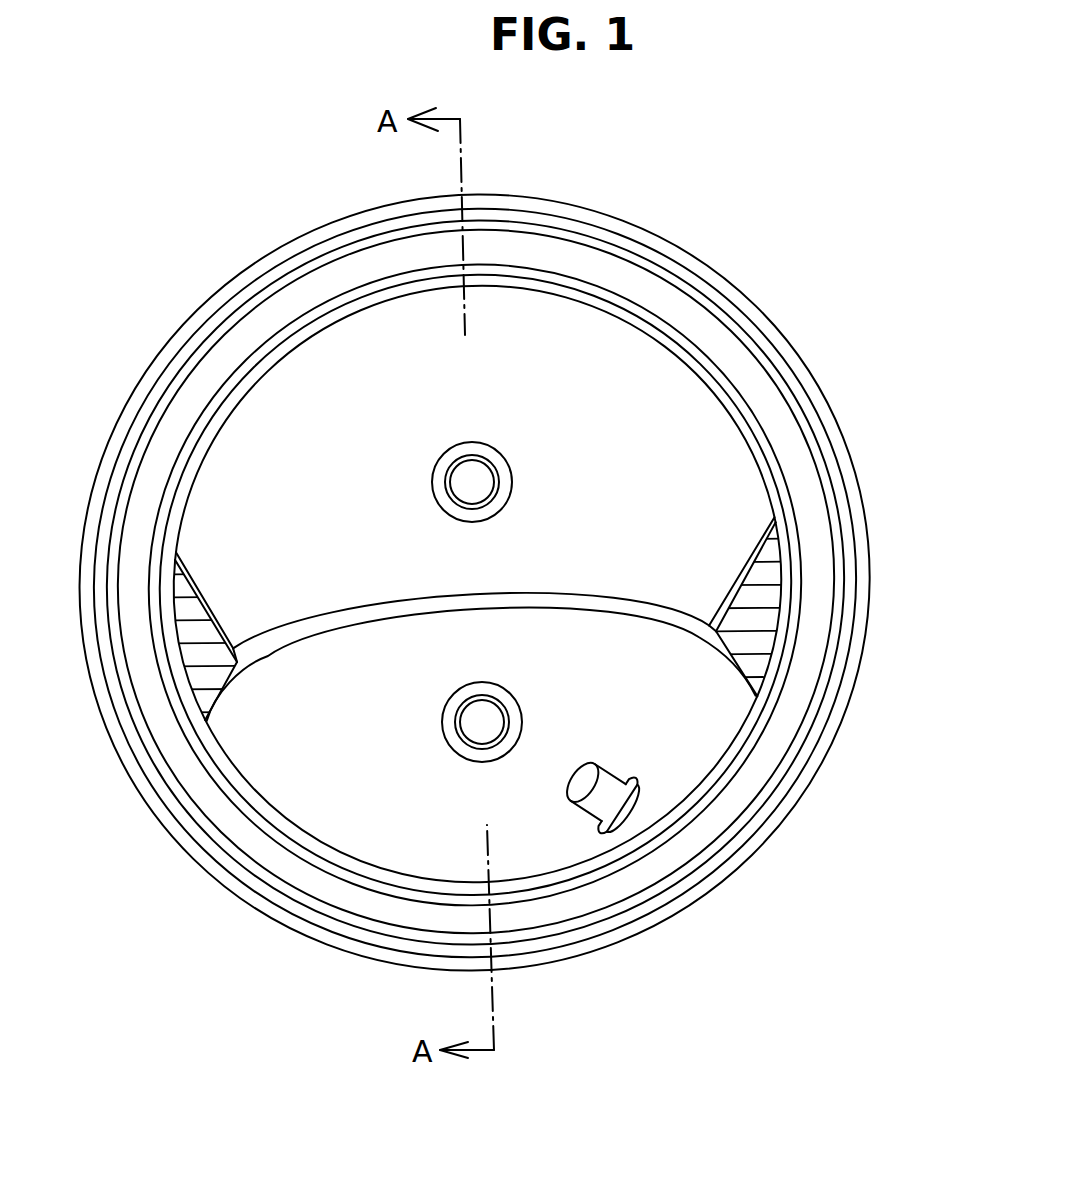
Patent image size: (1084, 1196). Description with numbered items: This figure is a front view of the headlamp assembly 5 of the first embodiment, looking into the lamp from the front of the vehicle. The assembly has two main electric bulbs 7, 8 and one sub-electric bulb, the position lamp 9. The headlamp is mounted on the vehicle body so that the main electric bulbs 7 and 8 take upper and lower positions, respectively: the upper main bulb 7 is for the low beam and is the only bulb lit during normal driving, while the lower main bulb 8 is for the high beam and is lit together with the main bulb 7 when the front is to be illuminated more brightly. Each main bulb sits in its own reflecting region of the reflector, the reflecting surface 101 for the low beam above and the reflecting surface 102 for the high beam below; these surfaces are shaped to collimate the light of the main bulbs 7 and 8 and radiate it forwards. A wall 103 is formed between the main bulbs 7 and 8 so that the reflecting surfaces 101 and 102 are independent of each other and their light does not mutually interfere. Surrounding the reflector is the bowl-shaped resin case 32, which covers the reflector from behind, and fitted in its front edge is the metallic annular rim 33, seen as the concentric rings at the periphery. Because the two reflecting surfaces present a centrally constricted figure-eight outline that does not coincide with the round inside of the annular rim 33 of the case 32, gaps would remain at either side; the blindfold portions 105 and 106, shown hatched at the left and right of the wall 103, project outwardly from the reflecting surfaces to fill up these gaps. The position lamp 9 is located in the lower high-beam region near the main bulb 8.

The headlamp assembly 5 is at (252, 933).
The main electric bulb 7 is at (480, 480).
The main electric bulb 8 is at (488, 720).
The position lamp 9 is at (604, 783).
The case 32 is at (848, 707).
The annular rim 33 is at (758, 827).
The reflecting surface 101 is at (342, 487).
The reflecting surface 102 is at (372, 748).
The wall 103 is at (572, 590).
The blindfold portion 105 is at (192, 655).
The blindfold portion 106 is at (763, 600).